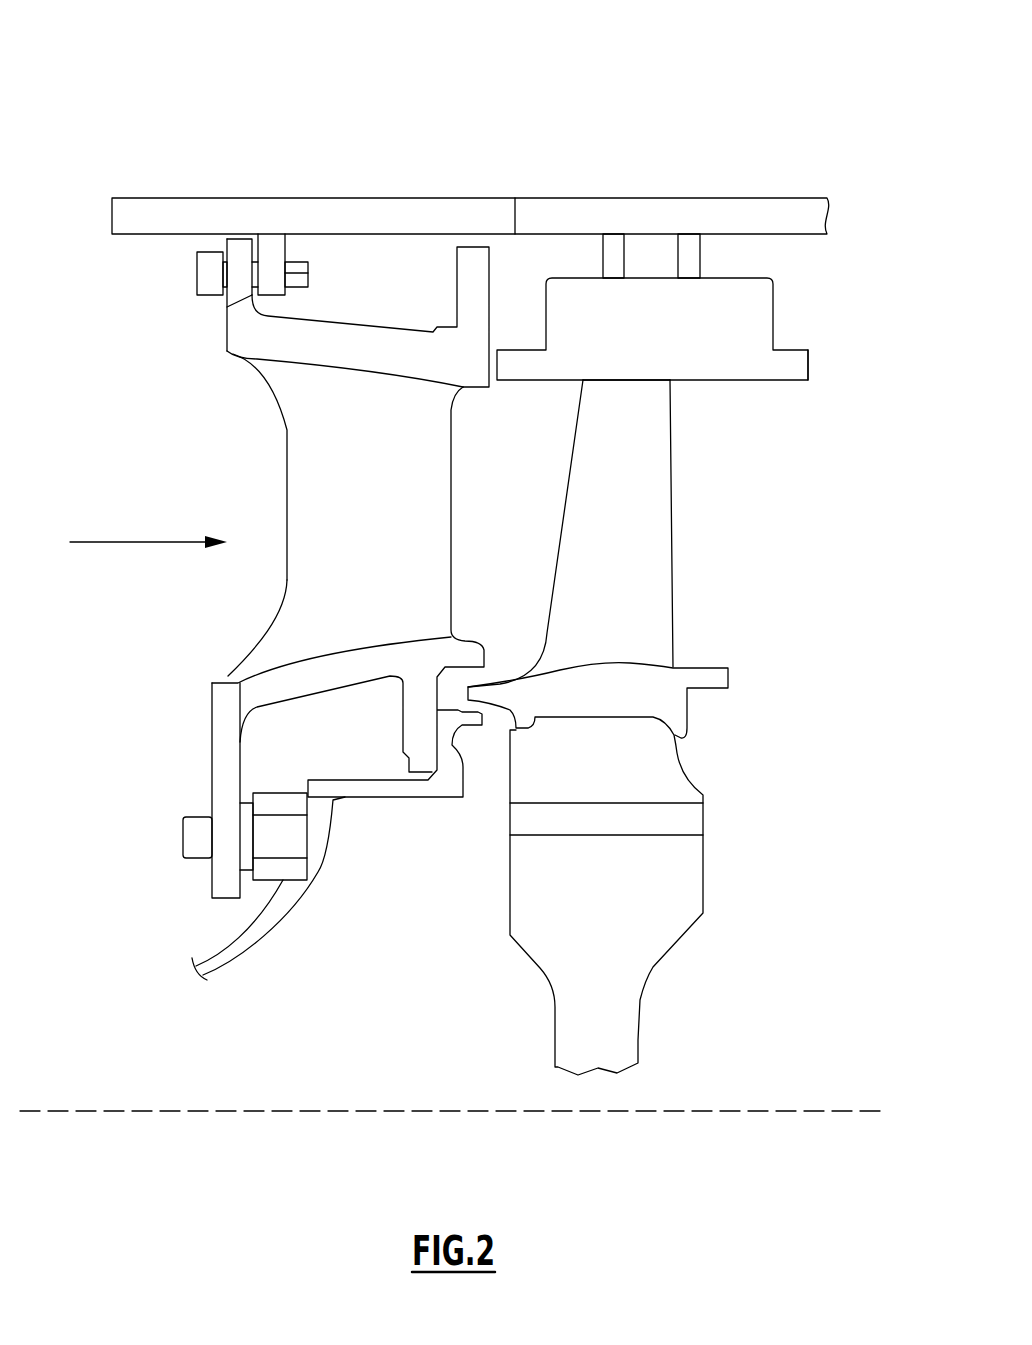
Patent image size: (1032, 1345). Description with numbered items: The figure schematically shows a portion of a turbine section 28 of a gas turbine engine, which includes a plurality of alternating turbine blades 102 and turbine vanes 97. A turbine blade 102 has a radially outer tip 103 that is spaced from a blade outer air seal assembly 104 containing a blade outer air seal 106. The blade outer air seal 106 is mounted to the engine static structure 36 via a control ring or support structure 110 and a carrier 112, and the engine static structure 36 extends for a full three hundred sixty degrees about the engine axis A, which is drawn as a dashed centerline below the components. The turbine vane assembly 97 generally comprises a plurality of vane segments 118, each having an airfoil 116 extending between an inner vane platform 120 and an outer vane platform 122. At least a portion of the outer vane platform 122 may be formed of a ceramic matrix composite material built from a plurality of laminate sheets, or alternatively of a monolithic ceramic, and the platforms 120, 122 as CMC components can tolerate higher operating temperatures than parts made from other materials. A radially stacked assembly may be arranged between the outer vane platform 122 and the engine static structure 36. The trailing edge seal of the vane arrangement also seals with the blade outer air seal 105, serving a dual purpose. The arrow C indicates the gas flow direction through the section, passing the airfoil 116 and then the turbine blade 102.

The turbine section 28 is at (752, 80).
The engine static structure 36 is at (178, 213).
The turbine vane assembly 97 is at (284, 607).
The turbine blade 102 is at (608, 727).
The radially outer tip 103 is at (652, 380).
The blade outer air seal assembly 104 is at (711, 330).
The blade outer air seal 105 is at (794, 351).
The blade outer air seal 106 is at (792, 365).
The support structure 110 is at (557, 208).
The carrier 112 is at (615, 262).
The airfoil 116 is at (305, 482).
The vane segment 118 is at (290, 612).
The inner vane platform 120 is at (240, 690).
The outer vane platform 122 is at (232, 343).
The engine axis A is at (822, 1111).
The core flow path C is at (100, 541).